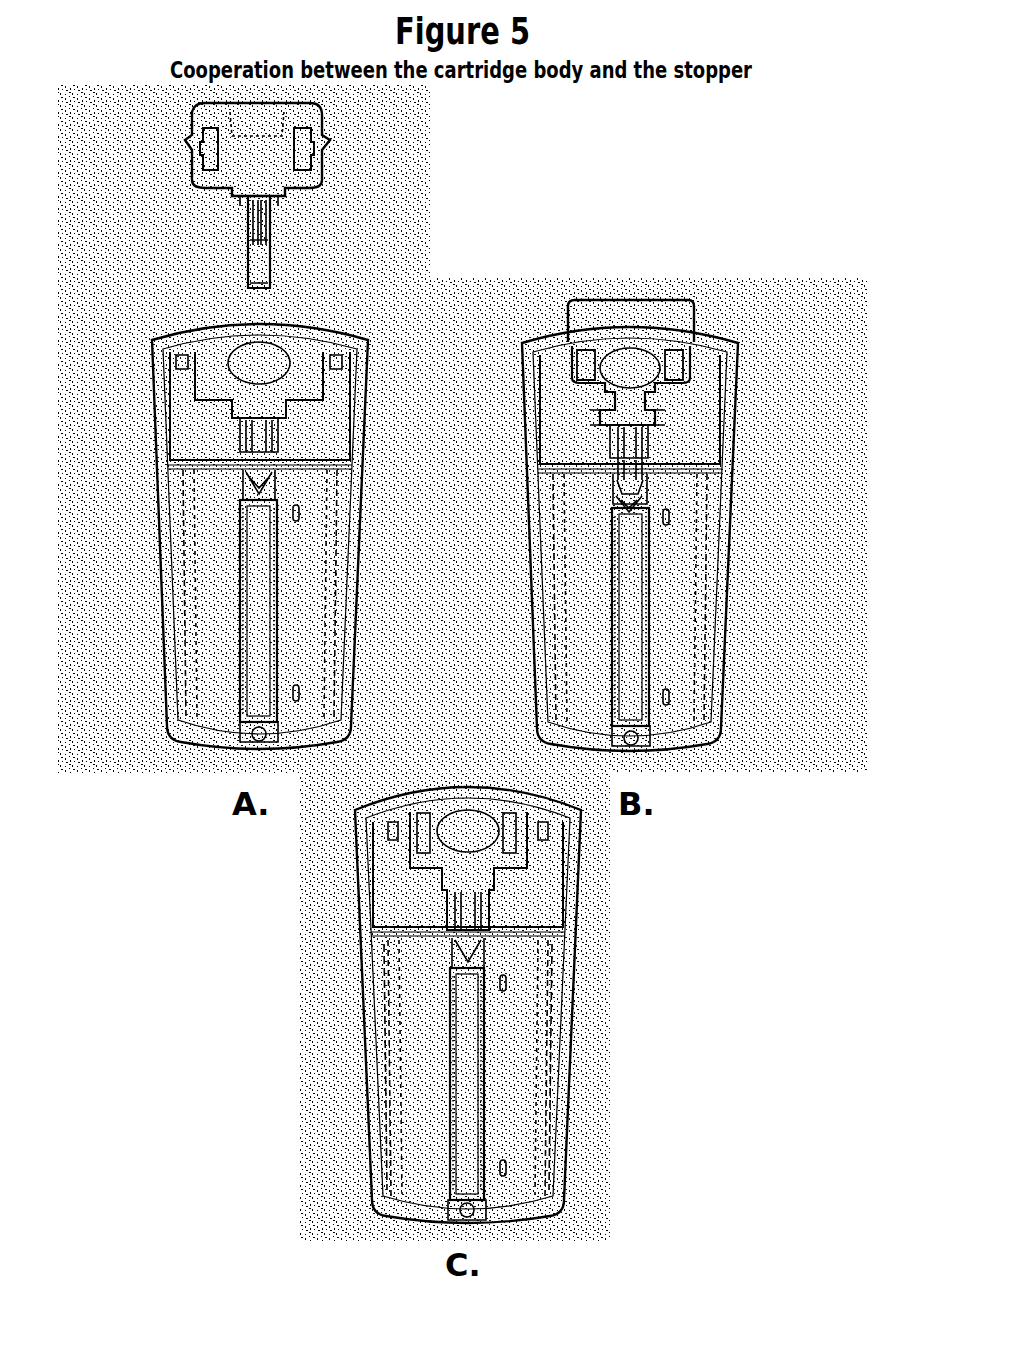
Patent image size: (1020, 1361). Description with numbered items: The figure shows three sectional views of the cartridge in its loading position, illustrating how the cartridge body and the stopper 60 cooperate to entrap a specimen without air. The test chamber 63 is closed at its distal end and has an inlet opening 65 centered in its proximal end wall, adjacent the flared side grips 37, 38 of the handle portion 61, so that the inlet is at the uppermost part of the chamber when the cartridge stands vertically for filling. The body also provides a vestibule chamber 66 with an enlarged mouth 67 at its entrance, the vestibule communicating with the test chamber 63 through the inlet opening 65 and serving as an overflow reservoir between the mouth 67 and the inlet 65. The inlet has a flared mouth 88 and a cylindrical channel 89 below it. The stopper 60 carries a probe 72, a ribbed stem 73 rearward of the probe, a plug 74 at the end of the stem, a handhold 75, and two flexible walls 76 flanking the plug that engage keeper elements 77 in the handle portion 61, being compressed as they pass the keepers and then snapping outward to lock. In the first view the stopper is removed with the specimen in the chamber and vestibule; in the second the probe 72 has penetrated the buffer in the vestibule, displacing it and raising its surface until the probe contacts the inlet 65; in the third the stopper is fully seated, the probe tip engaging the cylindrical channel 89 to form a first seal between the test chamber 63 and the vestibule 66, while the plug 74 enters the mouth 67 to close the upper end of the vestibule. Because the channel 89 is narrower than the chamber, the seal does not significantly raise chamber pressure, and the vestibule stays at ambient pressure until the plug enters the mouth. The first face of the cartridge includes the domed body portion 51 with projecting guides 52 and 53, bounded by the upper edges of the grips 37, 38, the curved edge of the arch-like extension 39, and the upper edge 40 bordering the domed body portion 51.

In FIG. 5A, the grip 37 is at (363, 376).
In FIG. 5B, the grip 37 is at (630, 539).
In FIG. 5C, the grip 37 is at (575, 860).
In FIG. 5A, the grip 38 is at (192, 372).
In FIG. 5C, the grip 38 is at (275, 860).
In FIG. 5C, the arch-like extension 39 is at (388, 760).
In FIG. 5C, the upper edge 40 is at (547, 943).
In FIG. 5C, the domed body portion 51 is at (305, 986).
In FIG. 5C, the projecting guide 52 is at (548, 1100).
In FIG. 5C, the projecting guide 53 is at (296, 1042).
In FIG. 5A, the stopper 60 is at (320, 135).
In FIG. 5B, the stopper 60 is at (684, 313).
In FIG. 5C, the stopper 60 is at (462, 800).
In FIG. 5A, the handle portion 61 is at (186, 415).
In FIG. 5A, the test chamber 63 is at (254, 672).
In FIG. 5B, the test chamber 63 is at (622, 634).
In FIG. 5C, the test chamber 63 is at (467, 1031).
In FIG. 5A, the inlet opening 65 is at (277, 500).
In FIG. 5B, the inlet opening 65 is at (648, 496).
In FIG. 5A, the vestibule chamber 66 is at (174, 468).
In FIG. 5A, the enlarged mouth 67 is at (332, 405).
In FIG. 5B, the enlarged mouth 67 is at (662, 414).
In FIG. 5A, the probe 72 is at (253, 273).
In FIG. 5B, the probe 72 is at (672, 477).
In FIG. 5A, the ribbed stem 73 is at (234, 216).
In FIG. 5A, the plug 74 is at (273, 196).
In FIG. 5B, the plug 74 is at (648, 396).
In FIG. 5A, the handhold 75 is at (234, 135).
In FIG. 5A, the flexible wall 76 is at (193, 156).
In FIG. 5A, the keeper element 77 is at (193, 353).
In FIG. 5B, the flared mouth 88 is at (615, 494).
In FIG. 5B, the cylindrical channel 89 is at (617, 497).